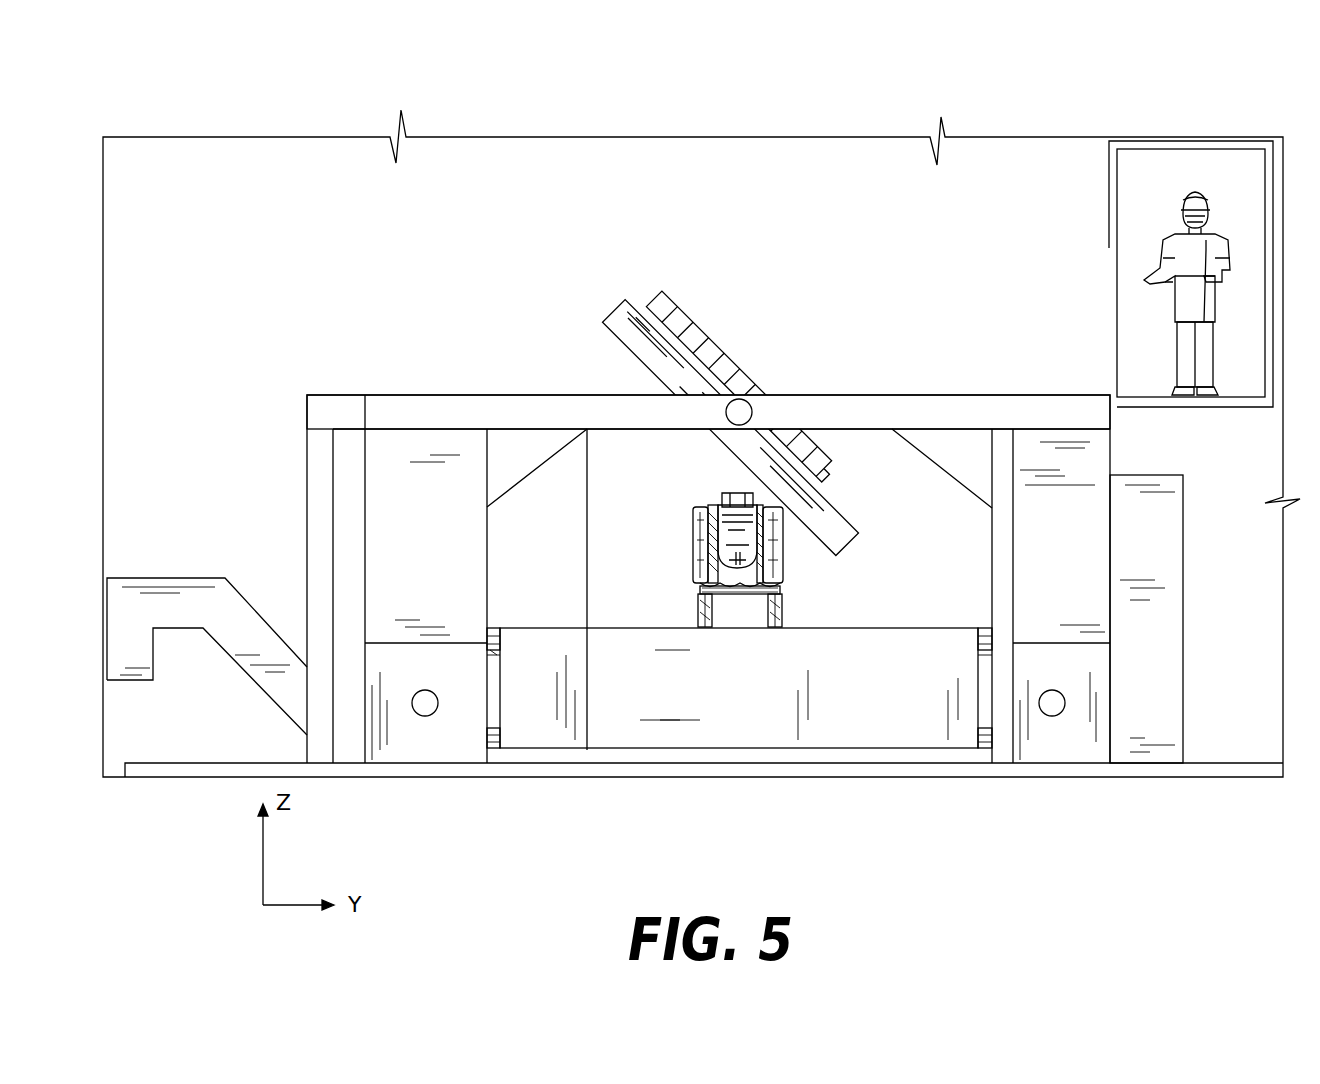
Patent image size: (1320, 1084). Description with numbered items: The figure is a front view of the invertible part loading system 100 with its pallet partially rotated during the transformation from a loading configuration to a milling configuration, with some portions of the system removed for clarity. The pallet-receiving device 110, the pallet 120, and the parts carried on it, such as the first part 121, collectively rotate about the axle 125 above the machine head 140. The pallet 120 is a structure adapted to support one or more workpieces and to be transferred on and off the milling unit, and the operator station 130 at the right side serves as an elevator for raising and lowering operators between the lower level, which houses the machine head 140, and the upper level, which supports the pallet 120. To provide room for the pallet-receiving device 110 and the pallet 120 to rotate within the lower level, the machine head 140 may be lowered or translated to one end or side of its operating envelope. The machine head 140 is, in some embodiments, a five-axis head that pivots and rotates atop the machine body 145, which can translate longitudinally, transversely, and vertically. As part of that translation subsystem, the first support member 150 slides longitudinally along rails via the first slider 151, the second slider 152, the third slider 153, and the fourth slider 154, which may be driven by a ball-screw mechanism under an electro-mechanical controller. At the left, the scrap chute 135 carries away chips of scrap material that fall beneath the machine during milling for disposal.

The invertible part loading system 100 is at (622, 103).
The pallet-receiving device 110 is at (630, 342).
The pallet 120 is at (648, 300).
The first part 121 is at (688, 322).
The axle 125 is at (742, 398).
The operator station 130 is at (1234, 164).
The scrap chute 135 is at (182, 602).
The machine head 140 is at (694, 520).
The machine body 145 is at (708, 602).
The first support member 150 is at (705, 705).
The first slider 151 is at (495, 628).
The second slider 152 is at (495, 752).
The third slider 153 is at (990, 626).
The fourth slider 154 is at (990, 752).